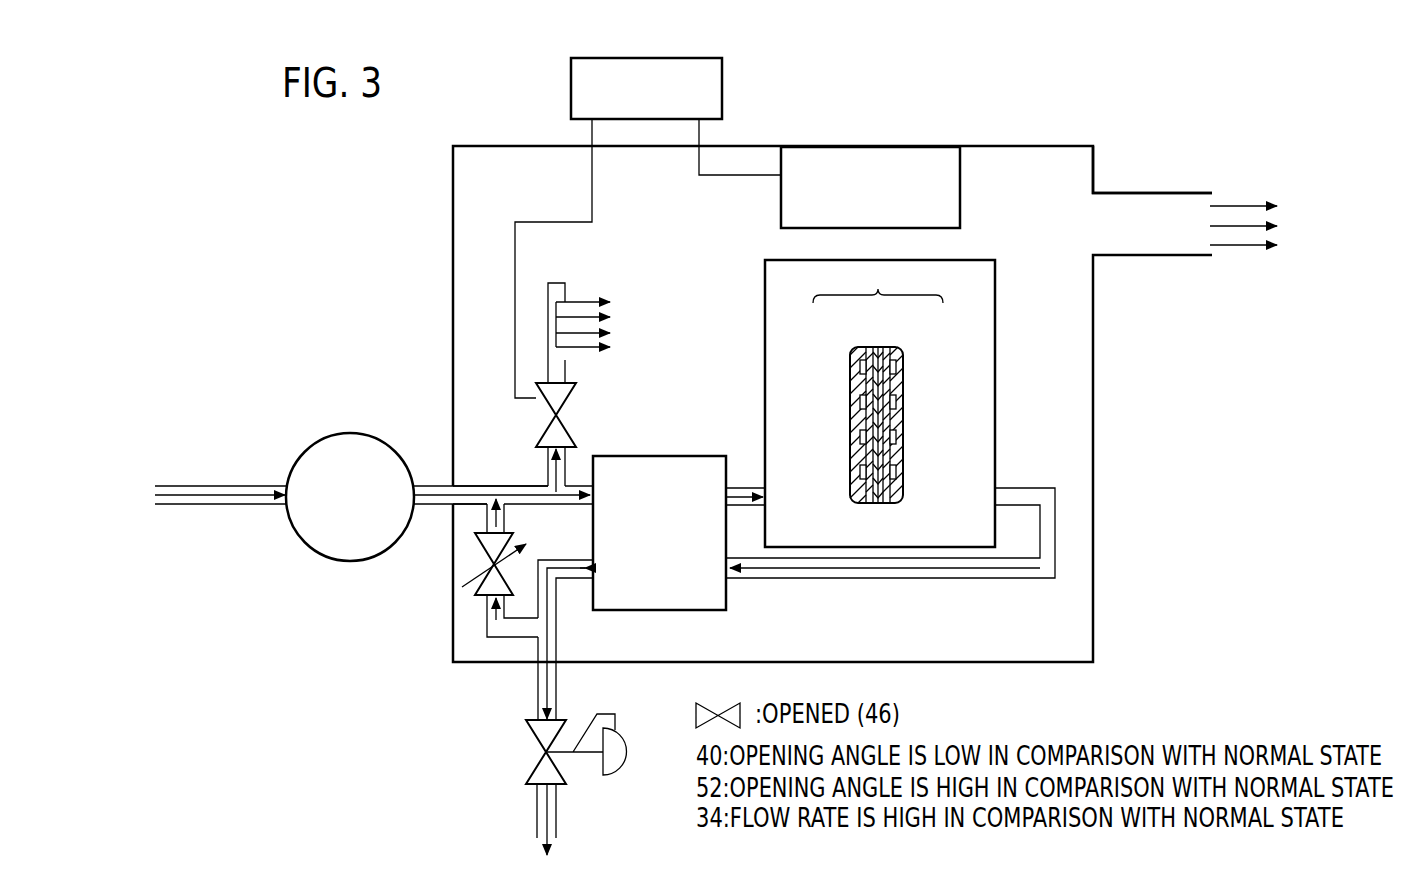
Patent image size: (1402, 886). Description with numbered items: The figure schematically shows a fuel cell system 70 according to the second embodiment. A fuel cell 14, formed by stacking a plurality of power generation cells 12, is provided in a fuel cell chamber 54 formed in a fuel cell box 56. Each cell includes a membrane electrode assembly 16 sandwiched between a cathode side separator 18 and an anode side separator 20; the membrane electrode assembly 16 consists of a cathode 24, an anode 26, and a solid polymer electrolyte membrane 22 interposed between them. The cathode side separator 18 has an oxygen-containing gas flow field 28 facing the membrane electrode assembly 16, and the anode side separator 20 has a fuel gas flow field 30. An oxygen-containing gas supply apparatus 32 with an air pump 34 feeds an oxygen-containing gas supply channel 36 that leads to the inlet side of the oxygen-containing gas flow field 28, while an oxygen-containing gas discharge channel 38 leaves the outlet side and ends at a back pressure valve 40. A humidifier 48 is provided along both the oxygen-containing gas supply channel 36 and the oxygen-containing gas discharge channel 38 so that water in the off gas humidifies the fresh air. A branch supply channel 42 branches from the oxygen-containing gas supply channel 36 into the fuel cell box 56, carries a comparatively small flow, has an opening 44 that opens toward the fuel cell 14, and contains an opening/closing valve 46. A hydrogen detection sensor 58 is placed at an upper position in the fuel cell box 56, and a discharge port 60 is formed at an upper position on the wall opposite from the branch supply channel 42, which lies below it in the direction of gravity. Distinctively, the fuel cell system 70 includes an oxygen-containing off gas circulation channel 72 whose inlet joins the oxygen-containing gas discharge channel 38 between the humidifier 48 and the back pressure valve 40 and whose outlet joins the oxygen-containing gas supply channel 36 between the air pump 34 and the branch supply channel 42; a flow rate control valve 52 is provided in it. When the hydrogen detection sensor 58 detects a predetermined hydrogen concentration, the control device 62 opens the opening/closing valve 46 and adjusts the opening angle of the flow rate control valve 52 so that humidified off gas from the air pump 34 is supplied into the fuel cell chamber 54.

The fuel cell system 70 is at (316, 151).
The fuel cell box 56 is at (508, 145).
The fuel cell chamber 54 is at (1055, 160).
The discharge port 60 is at (1150, 205).
The control device 62 is at (722, 75).
The hydrogen detection sensor 58 is at (960, 165).
The fuel cell 14 is at (763, 258).
The power generation cell 12 is at (850, 379).
The membrane electrode assembly 16 is at (878, 284).
The cathode side separator 18 is at (850, 361).
The anode side separator 20 is at (903, 361).
The solid polymer electrolyte membrane 22 is at (878, 348).
The cathode 24 is at (866, 348).
The anode 26 is at (888, 348).
The oxygen-containing gas flow field 28 is at (858, 442).
The fuel gas flow field 30 is at (896, 442).
The humidifier 48 is at (706, 456).
The oxygen-containing gas discharge channel 38 is at (824, 580).
The oxygen-containing gas supply apparatus 32 is at (327, 423).
The air pump 34 is at (407, 458).
The oxygen-containing gas supply channel 36 is at (505, 483).
The opening/closing valve 46 is at (570, 425).
The branch supply channel 42 is at (548, 330).
The opening 44 is at (567, 300).
The flow rate control valve 52 is at (483, 548).
The oxygen-containing off gas circulation channel 72 is at (486, 625).
The back pressure valve 40 is at (535, 740).